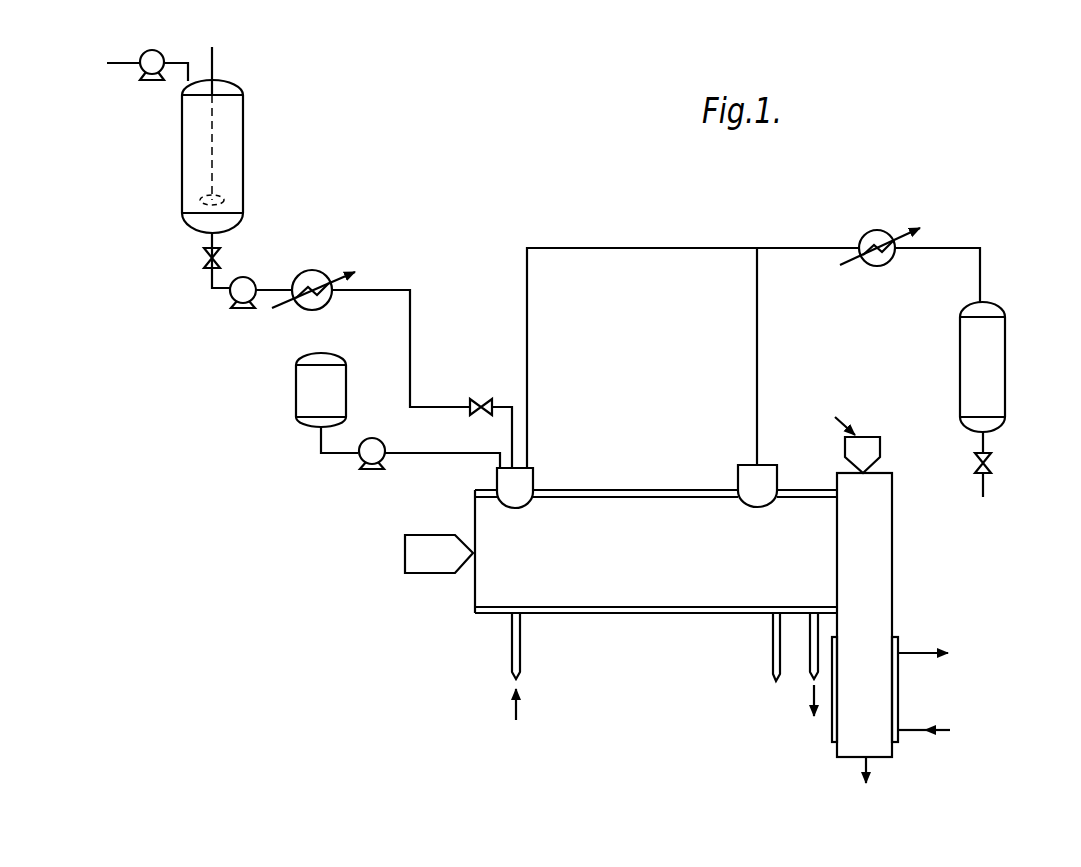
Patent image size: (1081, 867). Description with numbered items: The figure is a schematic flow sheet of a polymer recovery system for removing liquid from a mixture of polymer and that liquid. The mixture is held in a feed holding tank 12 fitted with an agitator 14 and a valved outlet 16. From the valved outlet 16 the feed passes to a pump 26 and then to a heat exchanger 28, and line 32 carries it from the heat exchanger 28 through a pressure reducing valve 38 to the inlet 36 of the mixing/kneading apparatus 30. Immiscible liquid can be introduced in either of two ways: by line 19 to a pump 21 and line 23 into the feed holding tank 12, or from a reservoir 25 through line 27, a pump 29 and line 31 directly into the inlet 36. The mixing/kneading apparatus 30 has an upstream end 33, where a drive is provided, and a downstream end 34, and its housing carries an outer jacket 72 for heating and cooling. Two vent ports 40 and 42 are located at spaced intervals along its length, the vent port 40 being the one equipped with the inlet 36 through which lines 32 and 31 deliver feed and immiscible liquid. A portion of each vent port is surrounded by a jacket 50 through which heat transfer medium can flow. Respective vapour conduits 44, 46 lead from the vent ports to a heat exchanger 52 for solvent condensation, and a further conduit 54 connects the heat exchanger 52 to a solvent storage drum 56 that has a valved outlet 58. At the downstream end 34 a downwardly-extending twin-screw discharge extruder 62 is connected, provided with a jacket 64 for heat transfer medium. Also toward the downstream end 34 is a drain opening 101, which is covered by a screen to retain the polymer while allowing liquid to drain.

The feed holding tank 12 is at (243, 110).
The agitator 14 is at (233, 197).
The valved outlet 16 is at (205, 258).
The line 19 is at (115, 65).
The pump 21 is at (140, 67).
The line 23 is at (178, 65).
The reservoir 25 is at (296, 380).
The pump 26 is at (230, 297).
The line 27 is at (317, 442).
The heat exchanger 28 is at (308, 270).
The pump 29 is at (358, 458).
The mixing/kneading apparatus 30 is at (612, 592).
The line 31 is at (433, 455).
The line 32 is at (396, 289).
The upstream end 33 is at (462, 590).
The downstream end 34 is at (840, 513).
The inlet 36 is at (498, 443).
The pressure reducing valve 38 is at (487, 373).
The vent port 40 is at (532, 470).
The vent port 42 is at (775, 468).
The vapour conduit 44 is at (526, 288).
The vapour conduit 46 is at (757, 298).
The jacket 50 is at (523, 487).
The heat exchanger 52 is at (882, 208).
The conduit 54 is at (952, 252).
The solvent storage drum 56 is at (960, 337).
The valved outlet 58 is at (988, 467).
The twin-screw discharge extruder 62 is at (893, 583).
The jacket 64 is at (900, 705).
The outer jacket 72 is at (657, 615).
The drain opening 101 is at (772, 625).